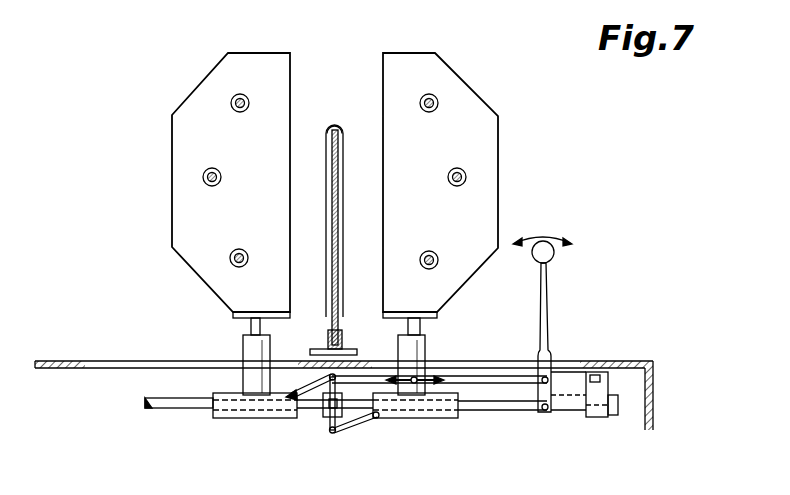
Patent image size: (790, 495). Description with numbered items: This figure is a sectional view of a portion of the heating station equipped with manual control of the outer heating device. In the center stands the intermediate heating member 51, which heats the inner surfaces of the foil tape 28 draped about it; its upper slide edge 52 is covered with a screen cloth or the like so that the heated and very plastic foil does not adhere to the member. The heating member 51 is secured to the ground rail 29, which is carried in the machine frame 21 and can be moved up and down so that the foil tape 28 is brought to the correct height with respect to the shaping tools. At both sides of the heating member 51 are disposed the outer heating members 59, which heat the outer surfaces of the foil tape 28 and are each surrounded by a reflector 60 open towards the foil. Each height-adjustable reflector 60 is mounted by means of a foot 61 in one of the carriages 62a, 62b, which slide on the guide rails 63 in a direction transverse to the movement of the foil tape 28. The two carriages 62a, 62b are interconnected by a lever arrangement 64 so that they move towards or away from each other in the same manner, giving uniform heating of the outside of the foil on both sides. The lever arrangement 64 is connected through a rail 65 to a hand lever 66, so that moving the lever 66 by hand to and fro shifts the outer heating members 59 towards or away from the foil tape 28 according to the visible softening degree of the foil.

The machine frame 21 is at (655, 383).
The foil tape 28 is at (344, 140).
The ground rail 29 is at (345, 347).
The intermediate heating member 51 is at (338, 190).
The upper slide edge 52 is at (337, 125).
The heating members 59 is at (246, 111).
The reflector 60 is at (200, 88).
The foot 61 is at (252, 340).
The carriage 62a is at (226, 419).
The carriage 62b is at (406, 411).
The guide rails 63 is at (499, 410).
The lever arrangement 64 is at (320, 425).
The rail 65 is at (493, 377).
The hand lever 66 is at (547, 303).